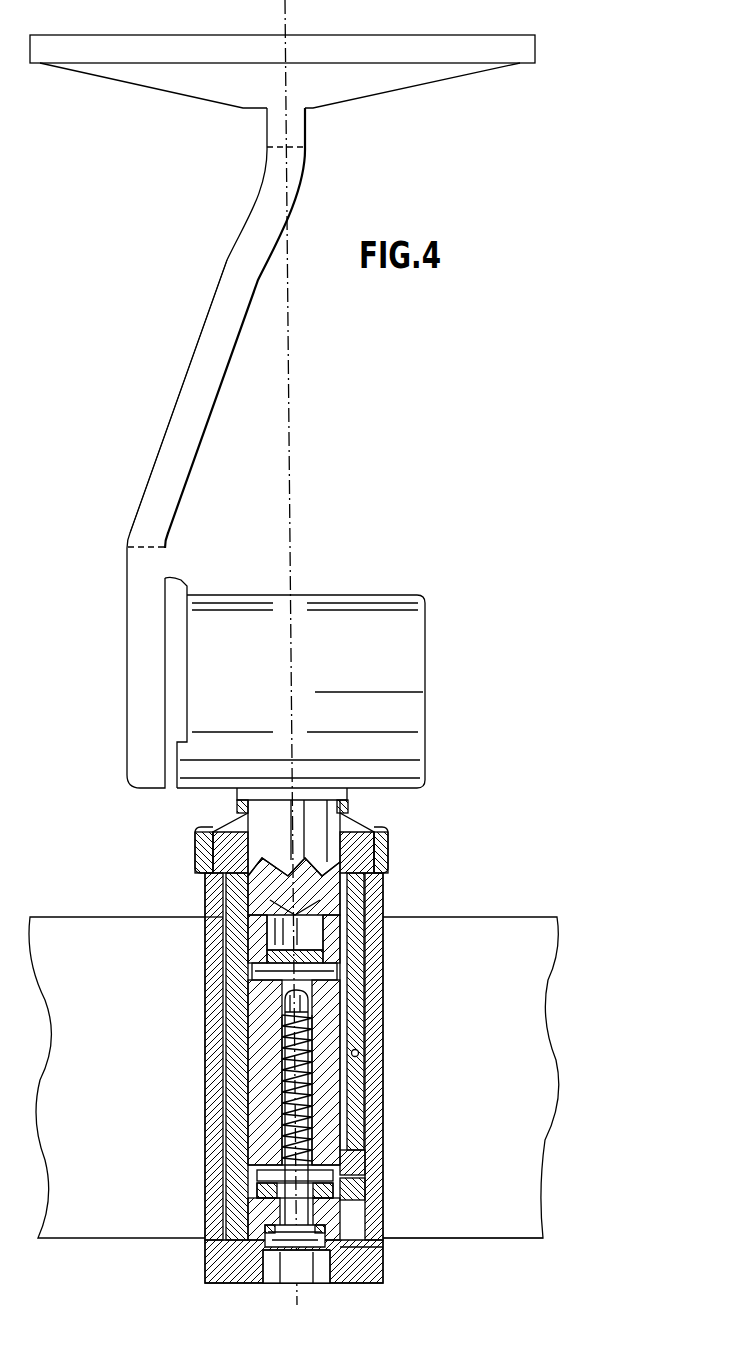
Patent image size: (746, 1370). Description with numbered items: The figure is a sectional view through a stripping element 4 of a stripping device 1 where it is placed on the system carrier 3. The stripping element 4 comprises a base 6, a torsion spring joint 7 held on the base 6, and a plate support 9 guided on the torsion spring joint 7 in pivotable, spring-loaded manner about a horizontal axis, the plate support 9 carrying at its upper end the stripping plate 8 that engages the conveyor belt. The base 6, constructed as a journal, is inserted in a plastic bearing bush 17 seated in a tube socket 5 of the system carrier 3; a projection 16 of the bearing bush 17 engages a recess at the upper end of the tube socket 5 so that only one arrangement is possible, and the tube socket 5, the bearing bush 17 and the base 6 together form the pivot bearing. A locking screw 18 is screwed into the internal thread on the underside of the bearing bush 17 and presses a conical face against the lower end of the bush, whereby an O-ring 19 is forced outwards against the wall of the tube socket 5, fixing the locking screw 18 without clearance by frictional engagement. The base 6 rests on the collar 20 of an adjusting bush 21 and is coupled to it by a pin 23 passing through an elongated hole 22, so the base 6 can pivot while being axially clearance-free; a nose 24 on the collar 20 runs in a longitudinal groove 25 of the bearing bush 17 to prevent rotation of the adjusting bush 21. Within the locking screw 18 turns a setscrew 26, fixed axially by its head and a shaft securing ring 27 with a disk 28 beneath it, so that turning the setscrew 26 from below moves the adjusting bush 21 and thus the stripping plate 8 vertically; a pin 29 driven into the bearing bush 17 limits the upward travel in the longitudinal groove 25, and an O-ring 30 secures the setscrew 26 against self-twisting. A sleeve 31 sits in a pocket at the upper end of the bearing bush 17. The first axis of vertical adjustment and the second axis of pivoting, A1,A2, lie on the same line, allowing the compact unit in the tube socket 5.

The stripping device 1 is at (498, 1255).
The system carrier 3 is at (527, 980).
The stripping element 4 is at (250, 352).
The tube socket 5 is at (390, 909).
The base 6 is at (262, 818).
The torsion spring joint 7 is at (427, 630).
The stripping plate 8 is at (350, 50).
The plate support 9 is at (243, 230).
The projection 16 is at (195, 860).
The bearing bush 17 is at (205, 920).
The locking screw 18 is at (237, 1285).
The O-ring 19 is at (208, 1243).
The collar 20 is at (353, 1162).
The adjusting bush 21 is at (387, 1013).
The elongated hole 22 is at (387, 963).
The pin 23 is at (240, 945).
The nose 24 is at (355, 1185).
The longitudinal groove 25 is at (388, 833).
The setscrew 26 is at (308, 1210).
The shaft securing ring 27 is at (260, 1170).
The disk 28 is at (262, 1186).
The pin 29 is at (385, 1052).
The O-ring 30 is at (352, 1270).
The sleeve 31 is at (353, 820).
The first and second axes A1,A2 is at (272, 669).